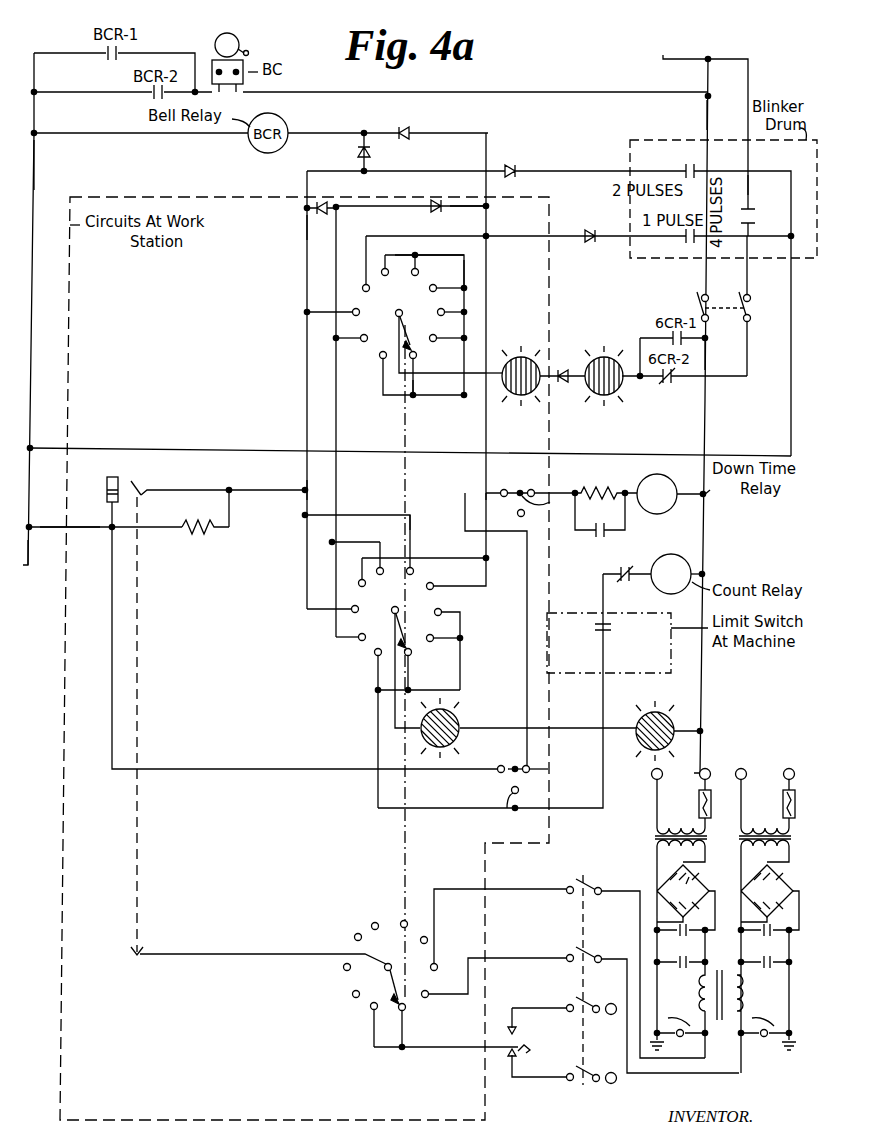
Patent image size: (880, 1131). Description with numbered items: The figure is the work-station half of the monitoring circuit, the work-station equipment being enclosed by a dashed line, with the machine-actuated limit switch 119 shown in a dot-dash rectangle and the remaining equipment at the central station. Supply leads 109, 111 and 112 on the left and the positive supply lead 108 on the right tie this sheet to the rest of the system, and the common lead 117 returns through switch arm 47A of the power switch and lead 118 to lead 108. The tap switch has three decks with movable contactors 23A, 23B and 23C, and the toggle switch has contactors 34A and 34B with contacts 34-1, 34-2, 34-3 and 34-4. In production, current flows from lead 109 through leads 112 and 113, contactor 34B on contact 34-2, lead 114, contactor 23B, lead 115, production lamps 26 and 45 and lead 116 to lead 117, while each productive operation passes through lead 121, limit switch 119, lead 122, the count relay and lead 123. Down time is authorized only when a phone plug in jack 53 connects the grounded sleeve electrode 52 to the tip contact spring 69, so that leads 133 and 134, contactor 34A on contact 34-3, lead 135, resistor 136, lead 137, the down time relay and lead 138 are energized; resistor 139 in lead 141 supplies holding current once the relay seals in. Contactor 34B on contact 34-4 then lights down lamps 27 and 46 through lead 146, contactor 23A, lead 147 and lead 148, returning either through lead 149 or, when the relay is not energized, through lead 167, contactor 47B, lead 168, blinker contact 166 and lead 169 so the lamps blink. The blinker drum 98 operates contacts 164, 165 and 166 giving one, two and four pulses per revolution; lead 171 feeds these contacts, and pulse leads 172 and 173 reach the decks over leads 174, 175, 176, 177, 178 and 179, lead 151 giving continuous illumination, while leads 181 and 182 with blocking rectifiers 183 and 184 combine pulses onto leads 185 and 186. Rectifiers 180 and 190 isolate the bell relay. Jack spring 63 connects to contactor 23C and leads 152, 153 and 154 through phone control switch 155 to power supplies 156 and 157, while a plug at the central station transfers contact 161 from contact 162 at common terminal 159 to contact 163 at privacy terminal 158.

The movable contactor 23A is at (407, 312).
The movable contactor 23B is at (393, 614).
The movable contactor 23C is at (388, 971).
The production lamp 26 is at (451, 728).
The down lamp 27 is at (517, 382).
The production lamp 45 is at (666, 731).
The down lamp 46 is at (601, 382).
The switch arm 47A is at (688, 307).
The contactor 47B is at (760, 334).
The contactor 34A is at (504, 488).
The switch arm 34B is at (500, 775).
The switch contact 34-1 is at (525, 517).
The contact 34-2 is at (508, 809).
The contact 34-3 is at (534, 490).
The contact 34-4 is at (552, 778).
The grounded sleeve electrode 52 is at (107, 493).
The phone jack 53 is at (131, 480).
The contact spring 63 is at (139, 950).
The tip contact spring 69 is at (142, 494).
The rotating drum 98 is at (814, 258).
The positive supply lead 108 is at (694, 61).
The lead 109 is at (32, 562).
The lead 111 is at (34, 163).
The lead 112 is at (101, 531).
The lead 113 is at (110, 704).
The lead 114 is at (378, 785).
The lead 115 is at (392, 728).
The lead 116 is at (700, 729).
The common lead 117 is at (706, 404).
The lead 118 is at (706, 117).
The limit switch 119 is at (594, 628).
The lead 121 is at (604, 688).
The lead 122 is at (604, 588).
The lead 123 is at (668, 556).
The lead 133 is at (205, 490).
The lead 134 is at (292, 496).
The lead 135 is at (530, 463).
The resistor 136 is at (603, 488).
The lead 137 is at (614, 515).
The lead 138 is at (690, 480).
The resistor 139 is at (200, 532).
The lead 141 is at (174, 531).
The lead 146 is at (527, 688).
The lead 147 is at (452, 376).
The lead 148 is at (622, 392).
The lead 149 is at (707, 340).
The lead 151 is at (464, 278).
The lead 152 is at (462, 1047).
The lead 153 is at (522, 956).
The lead 154 is at (540, 890).
The phone control switch 155 is at (573, 945).
The power supply 156 is at (686, 914).
The power supply 157 is at (768, 921).
The terminal 158 is at (564, 998).
The terminal 159 is at (592, 1067).
The contact 161 is at (529, 1053).
The contact 162 is at (516, 1063).
The contact 163 is at (514, 1029).
The blinker contact 164 is at (688, 242).
The blinker contact 165 is at (690, 166).
The blinker contact 166 is at (752, 220).
The lead 167 is at (668, 385).
The lead 168 is at (747, 260).
The lead 169 is at (750, 191).
The lead 171 is at (276, 450).
The pulsing lead 172 is at (592, 233).
The two pulse lead 173 is at (594, 170).
The lead 174 is at (488, 250).
The lead 175 is at (445, 558).
The lead 176 is at (426, 255).
The lead 177 is at (315, 212).
The lead 178 is at (305, 482).
The lead 179 is at (410, 530).
The rectifier 180 is at (407, 131).
The lead 181 is at (482, 210).
The lead 182 is at (320, 214).
The blocking rectifier 183 is at (433, 210).
The blocking rectifier 184 is at (319, 203).
The lead 185 is at (337, 214).
The lead 186 is at (344, 540).
The rectifier 190 is at (358, 152).